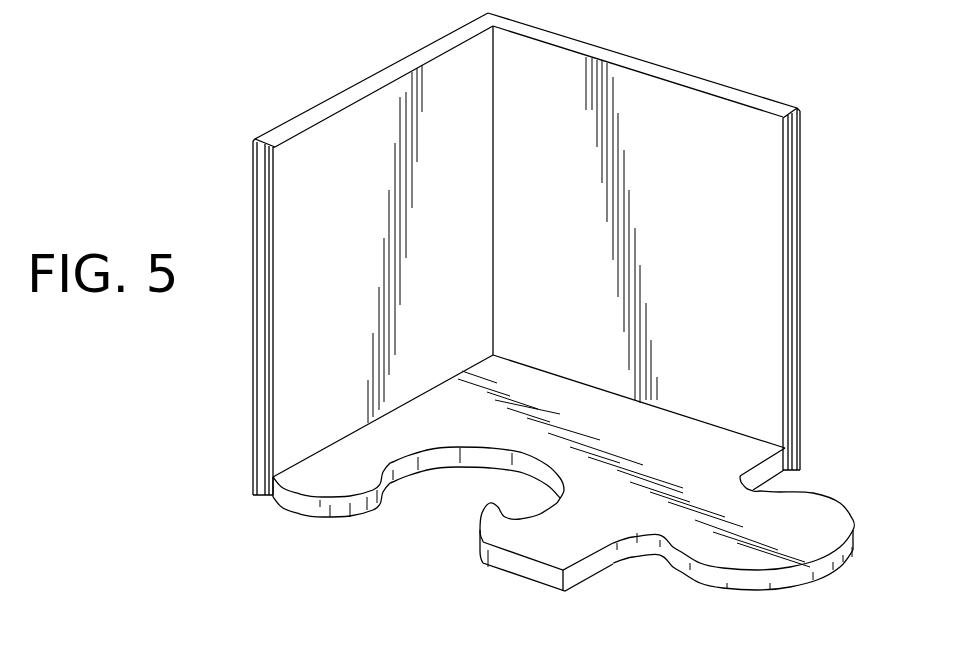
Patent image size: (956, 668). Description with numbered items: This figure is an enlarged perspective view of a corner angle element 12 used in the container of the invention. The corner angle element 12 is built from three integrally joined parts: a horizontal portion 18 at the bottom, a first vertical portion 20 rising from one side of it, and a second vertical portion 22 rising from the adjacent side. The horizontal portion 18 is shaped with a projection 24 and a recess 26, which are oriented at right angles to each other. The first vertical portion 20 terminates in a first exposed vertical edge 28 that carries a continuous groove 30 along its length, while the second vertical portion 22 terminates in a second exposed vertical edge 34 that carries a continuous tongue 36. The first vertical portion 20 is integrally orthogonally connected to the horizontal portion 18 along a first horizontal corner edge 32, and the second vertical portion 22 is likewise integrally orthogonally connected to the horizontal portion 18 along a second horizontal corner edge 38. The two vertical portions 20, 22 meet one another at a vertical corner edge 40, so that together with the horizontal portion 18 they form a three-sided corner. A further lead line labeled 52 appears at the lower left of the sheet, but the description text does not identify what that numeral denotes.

The corner angle element 12 is at (768, 78).
The horizontal portion 18 is at (603, 520).
The first vertical portion 20 is at (307, 173).
The second vertical portion 22 is at (698, 122).
The projection 24 is at (810, 545).
The recess 26 is at (487, 511).
The first exposed vertical edge 28 is at (249, 380).
The continuous groove 30 is at (270, 137).
The first horizontal corner edge 32 is at (342, 437).
The second exposed vertical edge 34 is at (808, 229).
The continuous tongue 36 is at (805, 472).
The second horizontal corner edge 38 is at (698, 413).
The vertical corner edge 40 is at (494, 238).
The support 52 is at (188, 667).